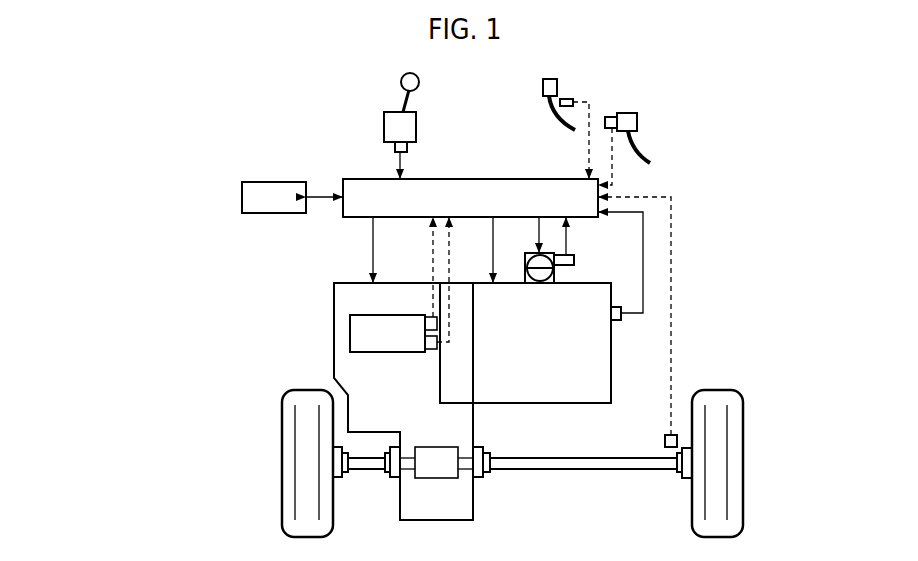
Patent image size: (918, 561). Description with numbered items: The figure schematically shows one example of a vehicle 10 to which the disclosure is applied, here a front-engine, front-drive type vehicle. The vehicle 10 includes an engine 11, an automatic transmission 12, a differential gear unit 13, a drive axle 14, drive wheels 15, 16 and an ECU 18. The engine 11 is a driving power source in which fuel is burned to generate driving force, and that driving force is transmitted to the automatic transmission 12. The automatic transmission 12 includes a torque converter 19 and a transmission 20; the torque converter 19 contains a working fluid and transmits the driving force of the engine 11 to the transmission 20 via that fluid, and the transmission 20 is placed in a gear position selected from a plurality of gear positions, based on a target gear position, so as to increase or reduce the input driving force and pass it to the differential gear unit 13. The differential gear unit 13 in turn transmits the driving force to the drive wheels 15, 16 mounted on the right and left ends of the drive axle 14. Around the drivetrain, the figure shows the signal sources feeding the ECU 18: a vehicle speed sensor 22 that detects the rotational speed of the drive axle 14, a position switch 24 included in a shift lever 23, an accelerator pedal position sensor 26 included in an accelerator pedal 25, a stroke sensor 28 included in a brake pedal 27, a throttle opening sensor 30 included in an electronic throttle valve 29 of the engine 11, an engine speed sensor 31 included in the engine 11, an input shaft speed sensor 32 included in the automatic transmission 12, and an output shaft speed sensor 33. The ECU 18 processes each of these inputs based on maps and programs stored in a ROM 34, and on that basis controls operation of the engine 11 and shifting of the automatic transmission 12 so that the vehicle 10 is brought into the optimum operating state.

The vehicle 10 is at (297, 115).
The engine 11 is at (529, 398).
The automatic transmission 12 is at (327, 268).
The differential gear unit 13 is at (445, 474).
The drive axle 14 is at (367, 462).
The drive wheel 15 is at (283, 452).
The drive wheel 16 is at (722, 392).
The ECU 18 is at (522, 162).
The torque converter 19 is at (462, 395).
The transmission 20 is at (352, 330).
The vehicle speed sensor 22 is at (664, 440).
The shift lever 23 is at (393, 100).
The position switch 24 is at (407, 148).
The accelerator pedal 25 is at (567, 128).
The accelerator pedal position sensor 26 is at (566, 99).
The brake pedal 27 is at (648, 150).
The stroke sensor 28 is at (620, 114).
The electronic throttle valve 29 is at (527, 258).
The throttle opening sensor 30 is at (575, 257).
The engine speed sensor 31 is at (616, 321).
The input shaft speed sensor 32 is at (430, 318).
The output shaft speed sensor 33 is at (433, 351).
The ROM 34 is at (242, 190).